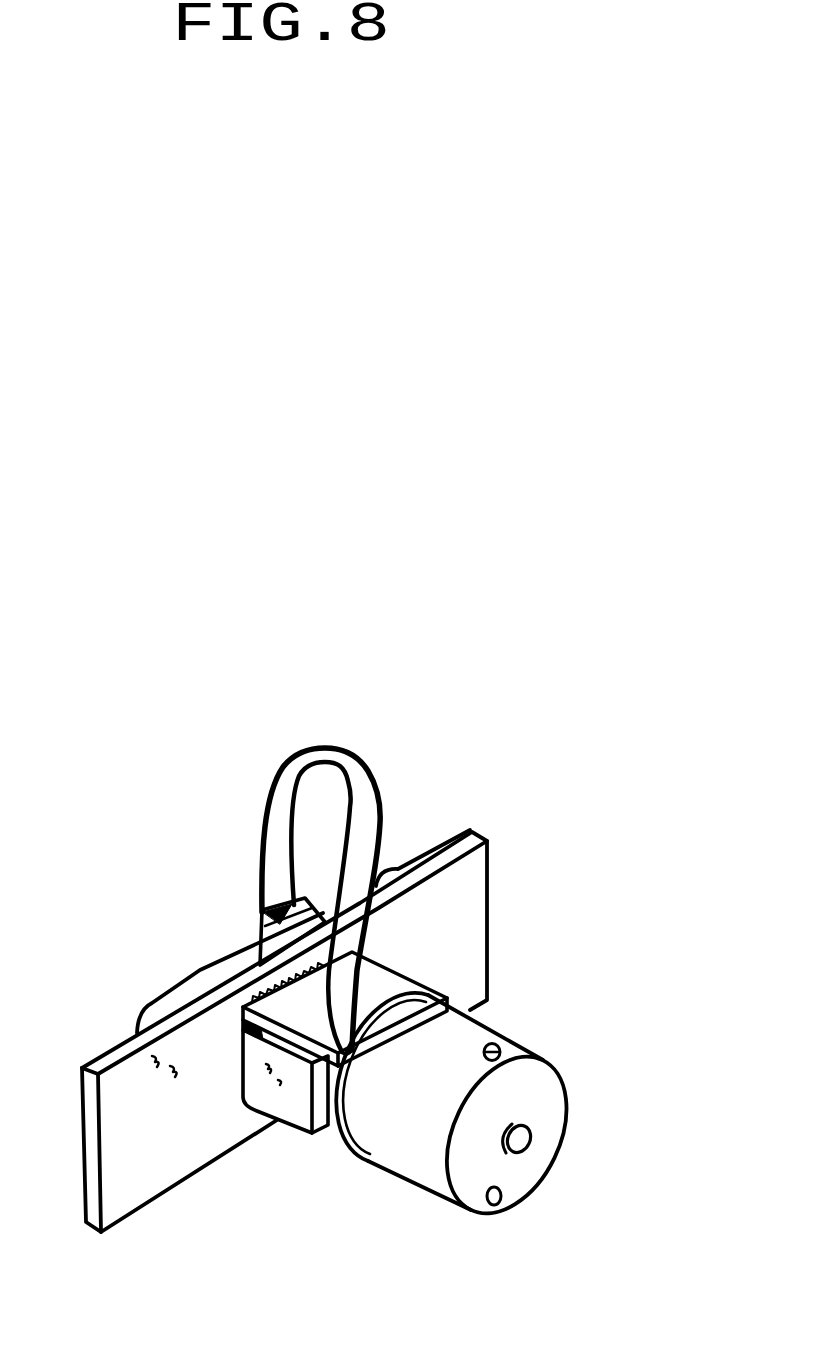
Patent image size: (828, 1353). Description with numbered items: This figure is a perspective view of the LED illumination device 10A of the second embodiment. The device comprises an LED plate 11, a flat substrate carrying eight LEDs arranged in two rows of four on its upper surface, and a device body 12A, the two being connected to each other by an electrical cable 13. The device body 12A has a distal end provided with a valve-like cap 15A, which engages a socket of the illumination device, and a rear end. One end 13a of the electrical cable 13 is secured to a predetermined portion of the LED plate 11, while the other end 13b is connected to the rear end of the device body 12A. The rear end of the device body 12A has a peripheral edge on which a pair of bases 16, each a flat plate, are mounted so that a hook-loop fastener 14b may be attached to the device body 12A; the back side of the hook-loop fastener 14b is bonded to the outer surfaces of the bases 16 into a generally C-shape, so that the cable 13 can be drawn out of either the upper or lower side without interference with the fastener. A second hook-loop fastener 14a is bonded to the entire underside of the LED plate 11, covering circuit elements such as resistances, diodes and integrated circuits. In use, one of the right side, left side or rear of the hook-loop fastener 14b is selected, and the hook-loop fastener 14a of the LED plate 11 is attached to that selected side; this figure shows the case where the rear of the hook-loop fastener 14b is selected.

The LED illumination device 10A is at (193, 817).
The LED plate 11 is at (122, 1045).
The device body 12A is at (463, 1038).
The electrical cable 13 is at (357, 778).
The end of the electrical cable 13a is at (262, 906).
The spring mounting plate 13b is at (357, 980).
The hook-loop fastener 14a is at (185, 1152).
The hook-loop fastener 14b is at (290, 1113).
The valve-like cap 15A is at (511, 1055).
The bases 16 is at (210, 977).